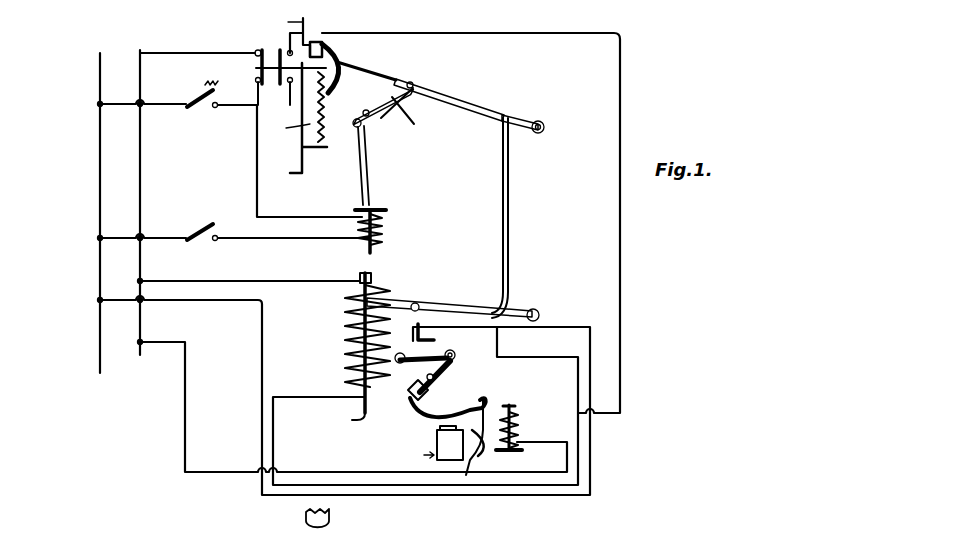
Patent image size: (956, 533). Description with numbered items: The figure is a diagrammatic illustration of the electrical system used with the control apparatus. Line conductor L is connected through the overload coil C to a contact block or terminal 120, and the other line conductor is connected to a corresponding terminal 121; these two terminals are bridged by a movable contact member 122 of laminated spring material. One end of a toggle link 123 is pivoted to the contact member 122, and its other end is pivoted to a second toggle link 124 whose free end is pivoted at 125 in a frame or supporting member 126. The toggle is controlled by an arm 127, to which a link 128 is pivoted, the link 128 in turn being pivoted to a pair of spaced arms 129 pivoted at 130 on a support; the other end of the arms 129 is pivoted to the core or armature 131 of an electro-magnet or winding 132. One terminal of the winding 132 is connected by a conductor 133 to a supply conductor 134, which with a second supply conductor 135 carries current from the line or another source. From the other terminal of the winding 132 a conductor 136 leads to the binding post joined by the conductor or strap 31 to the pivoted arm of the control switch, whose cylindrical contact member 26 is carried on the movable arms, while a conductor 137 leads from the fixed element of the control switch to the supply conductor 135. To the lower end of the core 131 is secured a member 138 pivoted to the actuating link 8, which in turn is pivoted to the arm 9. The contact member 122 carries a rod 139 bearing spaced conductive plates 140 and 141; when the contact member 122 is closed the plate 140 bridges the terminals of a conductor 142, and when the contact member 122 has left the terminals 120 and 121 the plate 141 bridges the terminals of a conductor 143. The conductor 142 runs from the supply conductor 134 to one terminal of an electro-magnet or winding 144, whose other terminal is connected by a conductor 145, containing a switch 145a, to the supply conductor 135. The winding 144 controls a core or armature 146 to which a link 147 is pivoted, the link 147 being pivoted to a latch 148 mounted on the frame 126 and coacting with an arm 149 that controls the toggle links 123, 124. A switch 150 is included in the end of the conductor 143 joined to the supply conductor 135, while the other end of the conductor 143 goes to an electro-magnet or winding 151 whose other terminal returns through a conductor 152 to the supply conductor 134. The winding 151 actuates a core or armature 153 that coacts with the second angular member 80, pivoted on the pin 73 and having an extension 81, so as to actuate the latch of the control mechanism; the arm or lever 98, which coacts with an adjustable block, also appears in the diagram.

The actuating member or link 8 is at (395, 420).
The arm 9 is at (420, 357).
The cylindrical contact member 26 is at (452, 355).
The conductor 31 is at (427, 380).
The pin or rod 73 is at (488, 437).
The second angular member 80 is at (470, 404).
The extension 81 is at (436, 410).
The arm or lever 98 is at (467, 470).
The contact block or terminal 120 is at (311, 132).
The terminal 121 is at (323, 44).
The movable contact member 122 is at (342, 66).
The toggle link 123 is at (348, 74).
The second toggle link 124 is at (432, 104).
The pivot 125 is at (414, 84).
The frame or supporting member 126 is at (384, 104).
The arm 127 is at (505, 116).
The link 128 is at (508, 200).
The spaced arms 129 is at (455, 300).
The pivot 130 is at (415, 303).
The core or armature 131 is at (370, 276).
The electro-magnet or winding 132 is at (345, 370).
The conductor 133 is at (308, 275).
The conductor 134 is at (143, 323).
The conductor 135 is at (100, 366).
The conductor 136 is at (518, 356).
The conductor 137 is at (547, 327).
The member 138 is at (366, 418).
The rod or member 139 is at (256, 50).
The conductive plate 140 is at (258, 62).
The conductive plate 141 is at (278, 79).
The conductor 142 is at (182, 53).
The conductor 143 is at (232, 106).
The electro-magnet or winding 144 is at (386, 224).
The conductor 145 is at (251, 239).
The switch 145a is at (204, 232).
The core or armature 146 is at (385, 210).
The link 147 is at (365, 180).
The latch 148 is at (381, 165).
The arm 149 is at (412, 111).
The switch 150 is at (196, 110).
The electro-magnet or winding 151 is at (520, 436).
The conductor 152 is at (505, 478).
The core or armature 153 is at (523, 401).